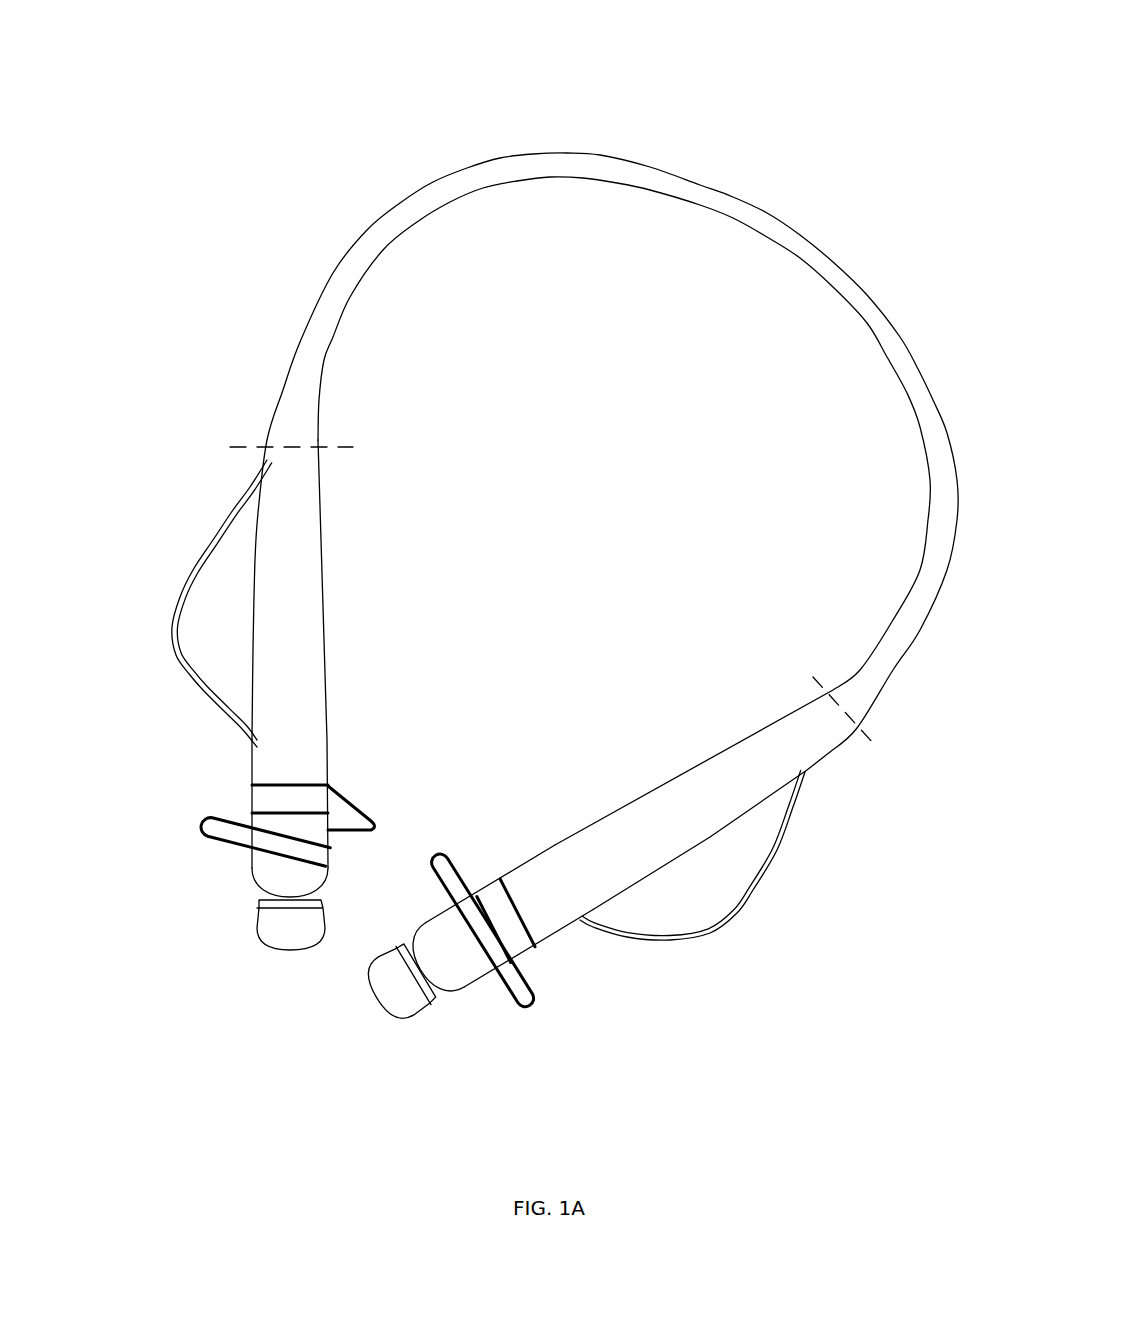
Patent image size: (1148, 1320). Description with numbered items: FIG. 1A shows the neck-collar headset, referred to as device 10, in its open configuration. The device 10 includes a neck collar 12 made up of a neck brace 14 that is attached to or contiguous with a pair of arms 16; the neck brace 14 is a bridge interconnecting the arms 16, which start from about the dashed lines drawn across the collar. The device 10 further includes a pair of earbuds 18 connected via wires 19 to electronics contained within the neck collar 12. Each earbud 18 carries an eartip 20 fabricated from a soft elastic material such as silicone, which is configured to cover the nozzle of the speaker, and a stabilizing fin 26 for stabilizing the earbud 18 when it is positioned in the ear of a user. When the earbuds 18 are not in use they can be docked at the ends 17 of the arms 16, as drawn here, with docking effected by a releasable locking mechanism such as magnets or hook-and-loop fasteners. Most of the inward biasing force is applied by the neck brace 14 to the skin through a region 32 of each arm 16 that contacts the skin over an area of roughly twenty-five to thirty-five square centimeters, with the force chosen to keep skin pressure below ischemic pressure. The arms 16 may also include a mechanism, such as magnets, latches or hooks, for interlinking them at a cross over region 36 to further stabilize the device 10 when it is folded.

The device 10 is at (578, 43).
The neck collar 12 is at (541, 531).
The neck brace 14 is at (742, 220).
The arms 16 is at (471, 908).
The ends of arms 17 is at (283, 800).
The earbuds 18 is at (263, 880).
The wires 19 is at (187, 593).
The eartip 20 is at (287, 948).
The stabilizing fin 26 is at (205, 833).
The region 32 is at (552, 654).
The cross over region 36 is at (287, 500).